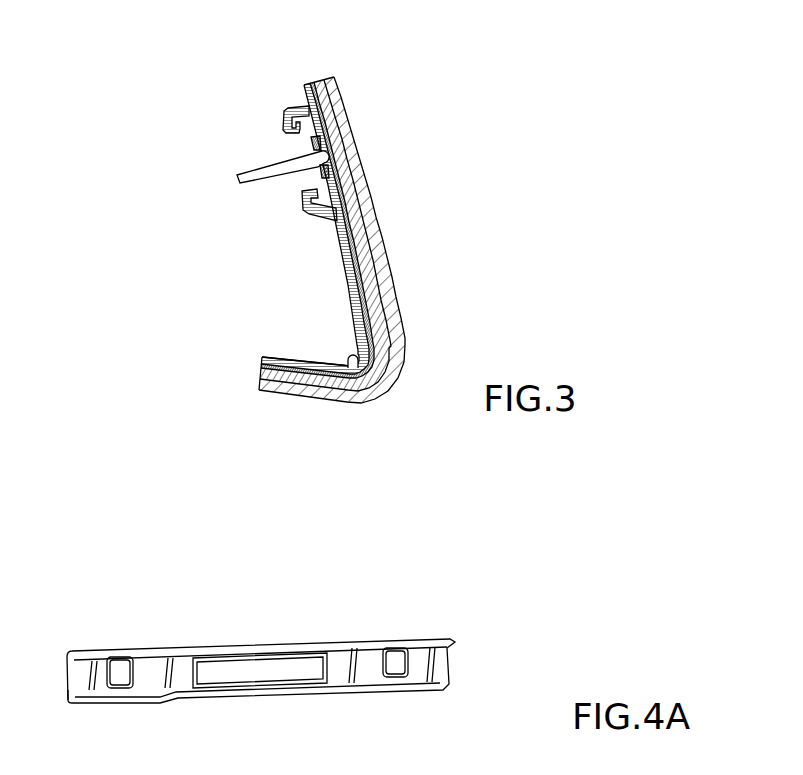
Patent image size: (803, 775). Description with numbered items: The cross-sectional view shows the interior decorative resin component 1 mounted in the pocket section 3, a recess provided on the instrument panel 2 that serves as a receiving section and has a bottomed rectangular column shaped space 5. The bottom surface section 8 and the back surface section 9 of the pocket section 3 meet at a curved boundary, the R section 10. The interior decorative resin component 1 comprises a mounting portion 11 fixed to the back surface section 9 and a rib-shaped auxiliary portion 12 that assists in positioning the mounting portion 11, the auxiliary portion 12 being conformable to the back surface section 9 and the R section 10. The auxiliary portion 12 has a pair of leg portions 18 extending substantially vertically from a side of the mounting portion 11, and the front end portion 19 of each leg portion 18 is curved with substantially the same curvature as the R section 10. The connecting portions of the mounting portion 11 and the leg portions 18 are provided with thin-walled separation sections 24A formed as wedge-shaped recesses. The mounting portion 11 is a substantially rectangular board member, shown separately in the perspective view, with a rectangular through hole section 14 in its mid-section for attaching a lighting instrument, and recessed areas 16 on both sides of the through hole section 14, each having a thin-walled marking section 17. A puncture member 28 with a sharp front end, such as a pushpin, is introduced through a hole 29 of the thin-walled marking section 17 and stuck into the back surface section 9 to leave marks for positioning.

In FIG. 3, the interior decorative resin component 1 is at (256, 129).
In FIG. 4A, the interior decorative resin component 1 is at (530, 716).
In FIG. 3, the instrument panel 2 is at (402, 240).
In FIG. 3, the pocket section 3 is at (372, 267).
In FIG. 3, the space 5 is at (333, 317).
In FIG. 3, the bottom surface section 8 is at (287, 360).
In FIG. 3, the back surface section 9 is at (398, 307).
In FIG. 3, the R section 10 is at (350, 360).
In FIG. 3, the mounting portion 11 is at (205, 85).
In FIG. 4A, the mounting portion 11 is at (295, 638).
In FIG. 3, the auxiliary portion 12 is at (337, 246).
In FIG. 4A, the through hole section 14 is at (210, 657).
In FIG. 3, the recessed area 16 is at (205, 109).
In FIG. 4A, the recessed area 16 is at (122, 662).
In FIG. 3, the thin-walled marking section 17 is at (237, 178).
In FIG. 3, the leg portion 18 is at (348, 283).
In FIG. 3, the front end portion 19 is at (357, 362).
In FIG. 3, the thin-walled separation section 24A is at (318, 220).
In FIG. 3, the puncture member 28 is at (331, 153).
In FIG. 3, the hole 29 is at (319, 154).